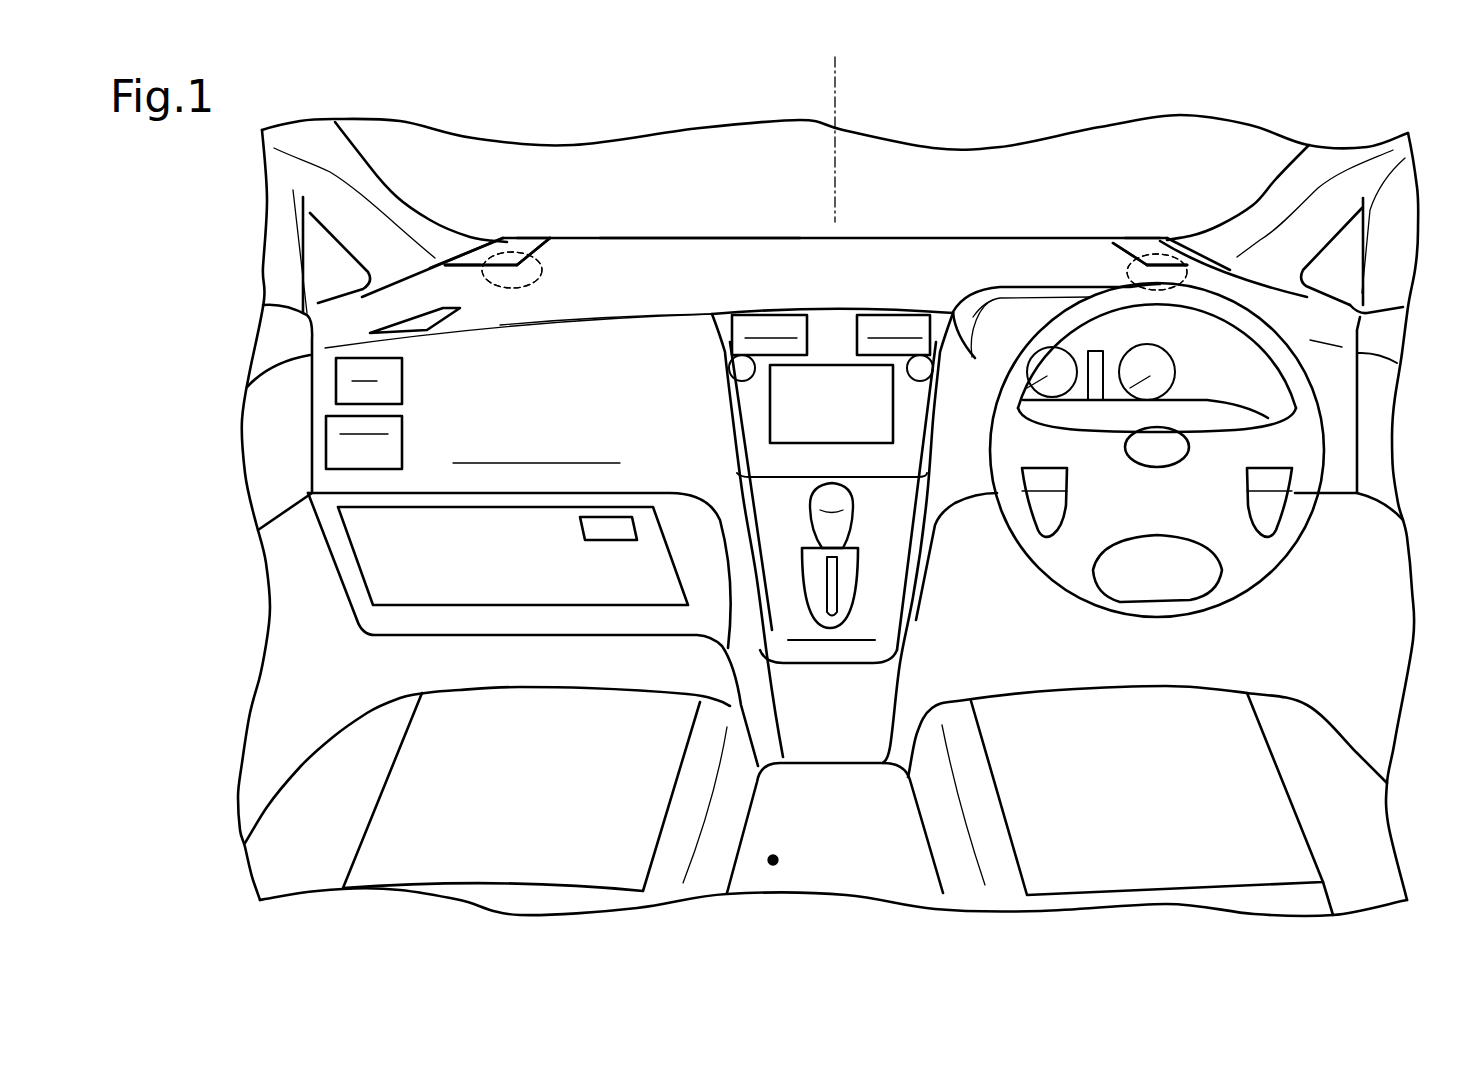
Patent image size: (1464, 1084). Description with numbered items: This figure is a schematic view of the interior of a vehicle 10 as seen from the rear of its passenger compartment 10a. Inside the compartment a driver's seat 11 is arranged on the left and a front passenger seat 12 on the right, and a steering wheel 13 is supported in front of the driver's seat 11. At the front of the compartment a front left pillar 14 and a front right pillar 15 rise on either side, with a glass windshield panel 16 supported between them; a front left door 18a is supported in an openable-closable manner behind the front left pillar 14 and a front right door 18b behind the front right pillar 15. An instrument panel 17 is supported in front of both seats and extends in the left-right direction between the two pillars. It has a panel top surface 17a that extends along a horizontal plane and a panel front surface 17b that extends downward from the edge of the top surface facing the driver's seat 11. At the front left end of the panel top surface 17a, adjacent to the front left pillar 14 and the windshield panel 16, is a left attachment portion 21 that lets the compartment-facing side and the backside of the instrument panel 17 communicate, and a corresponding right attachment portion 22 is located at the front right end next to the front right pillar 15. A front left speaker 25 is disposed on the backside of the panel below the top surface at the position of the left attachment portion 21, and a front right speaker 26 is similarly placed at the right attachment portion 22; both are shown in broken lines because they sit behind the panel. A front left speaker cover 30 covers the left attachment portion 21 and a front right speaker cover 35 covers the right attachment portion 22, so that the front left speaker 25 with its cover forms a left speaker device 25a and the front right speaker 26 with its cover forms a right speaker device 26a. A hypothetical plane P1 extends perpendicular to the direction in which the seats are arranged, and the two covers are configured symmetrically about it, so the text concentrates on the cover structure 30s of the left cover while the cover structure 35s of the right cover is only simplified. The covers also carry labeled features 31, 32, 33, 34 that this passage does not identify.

The vehicle 10 is at (1367, 127).
The passenger compartment 10a is at (773, 865).
The driver's seat 11 is at (1318, 732).
The front passenger seat 12 is at (303, 795).
The steering wheel 13 is at (1267, 553).
The front left pillar 14 is at (372, 170).
The front right pillar 15 is at (1302, 180).
The windshield panel 16 is at (993, 160).
The instrument panel 17 is at (783, 253).
The panel top surface 17a is at (693, 252).
The panel front surface 17b is at (570, 350).
The front left door 18a is at (265, 437).
The front right door 18b is at (1380, 430).
The left attachment portion 21 is at (550, 250).
The right attachment portion 22 is at (1110, 246).
The front left speaker 25 is at (510, 290).
The left speaker device 25a is at (596, 204).
The front right speaker 26 is at (1127, 268).
The right speaker device 26a is at (1081, 199).
The front left speaker cover 30 is at (517, 247).
The cover structure 30s is at (598, 200).
The housing side wall 31 is at (473, 250).
The housing inclined wall 32 is at (545, 249).
The housing lower wall 33 is at (460, 268).
The housing upper wall 34 is at (530, 247).
The front right speaker cover 35 is at (1160, 245).
The cover structure 35s is at (1079, 195).
The hypothetical plane P1 is at (836, 74).